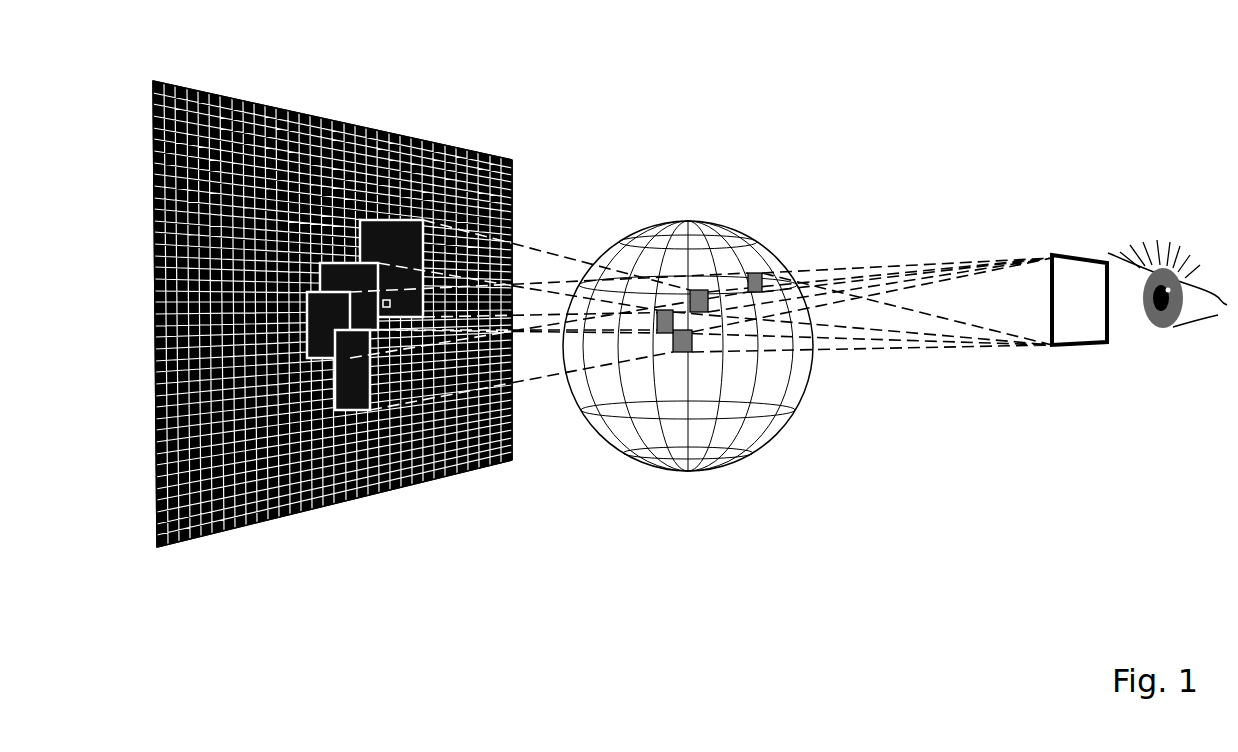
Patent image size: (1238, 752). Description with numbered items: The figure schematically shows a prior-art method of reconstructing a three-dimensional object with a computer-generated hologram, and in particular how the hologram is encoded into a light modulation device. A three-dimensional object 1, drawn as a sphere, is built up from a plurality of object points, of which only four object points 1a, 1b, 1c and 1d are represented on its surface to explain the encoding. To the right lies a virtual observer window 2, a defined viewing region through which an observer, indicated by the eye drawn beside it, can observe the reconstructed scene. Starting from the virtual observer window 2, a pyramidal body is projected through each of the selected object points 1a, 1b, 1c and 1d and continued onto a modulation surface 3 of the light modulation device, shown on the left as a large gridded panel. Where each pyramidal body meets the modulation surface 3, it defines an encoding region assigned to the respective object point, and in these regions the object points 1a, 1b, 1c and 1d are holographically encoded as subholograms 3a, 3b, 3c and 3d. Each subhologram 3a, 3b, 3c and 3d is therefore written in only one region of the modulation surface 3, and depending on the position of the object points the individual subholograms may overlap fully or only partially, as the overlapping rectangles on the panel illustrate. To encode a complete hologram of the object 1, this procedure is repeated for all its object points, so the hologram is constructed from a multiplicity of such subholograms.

The three-dimensional object 1 is at (700, 222).
The object point 1a is at (752, 278).
The object point 1b is at (698, 296).
The object point 1c is at (680, 352).
The object point 1d is at (660, 320).
The virtual observer window 2 is at (1075, 258).
The modulation surface 3 is at (383, 132).
The subhologram 3a is at (463, 150).
The subhologram 3b is at (279, 110).
The subhologram 3c is at (316, 503).
The subhologram 3d is at (232, 102).